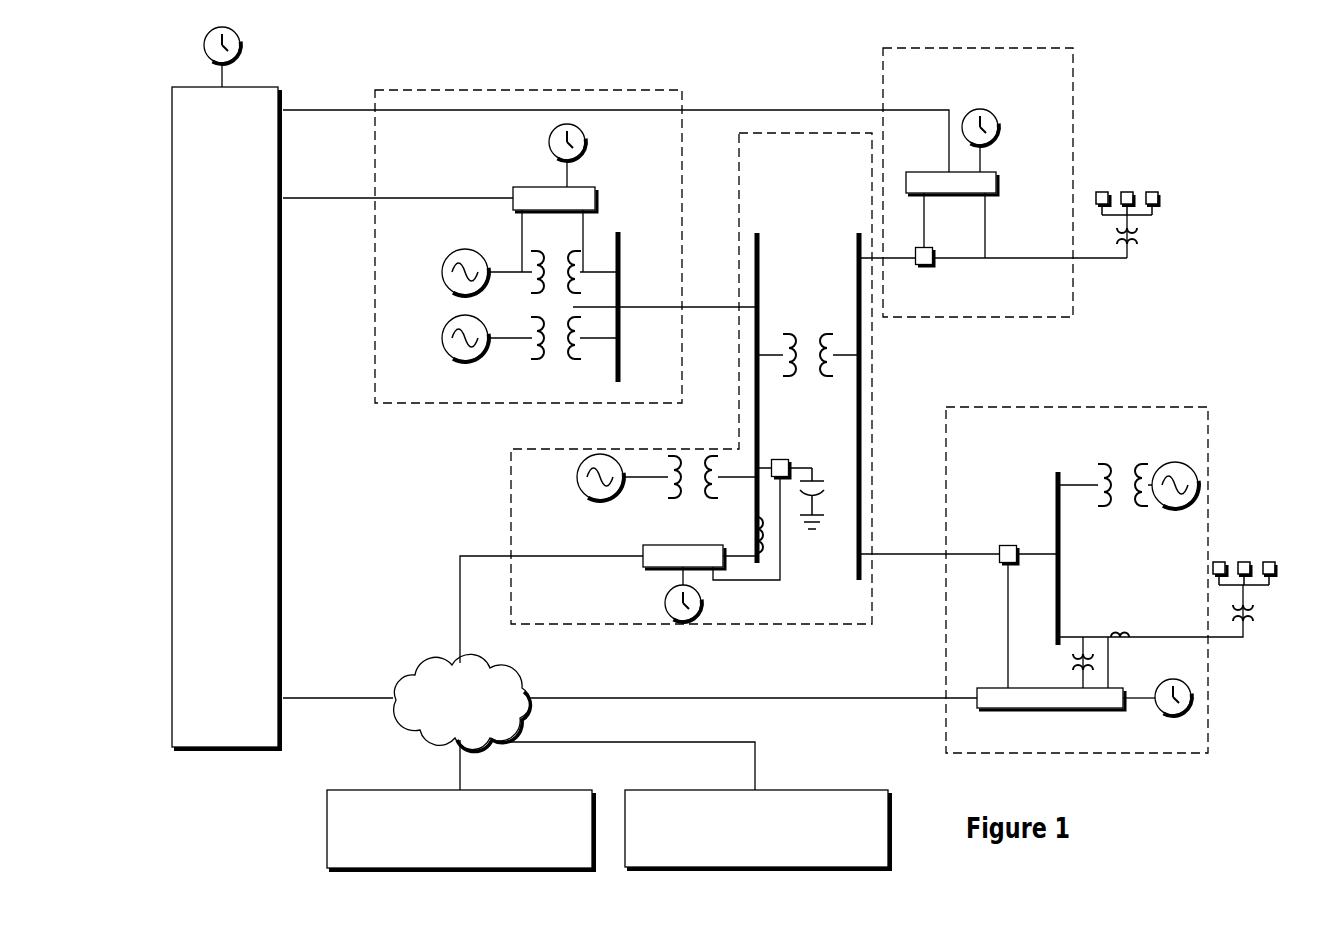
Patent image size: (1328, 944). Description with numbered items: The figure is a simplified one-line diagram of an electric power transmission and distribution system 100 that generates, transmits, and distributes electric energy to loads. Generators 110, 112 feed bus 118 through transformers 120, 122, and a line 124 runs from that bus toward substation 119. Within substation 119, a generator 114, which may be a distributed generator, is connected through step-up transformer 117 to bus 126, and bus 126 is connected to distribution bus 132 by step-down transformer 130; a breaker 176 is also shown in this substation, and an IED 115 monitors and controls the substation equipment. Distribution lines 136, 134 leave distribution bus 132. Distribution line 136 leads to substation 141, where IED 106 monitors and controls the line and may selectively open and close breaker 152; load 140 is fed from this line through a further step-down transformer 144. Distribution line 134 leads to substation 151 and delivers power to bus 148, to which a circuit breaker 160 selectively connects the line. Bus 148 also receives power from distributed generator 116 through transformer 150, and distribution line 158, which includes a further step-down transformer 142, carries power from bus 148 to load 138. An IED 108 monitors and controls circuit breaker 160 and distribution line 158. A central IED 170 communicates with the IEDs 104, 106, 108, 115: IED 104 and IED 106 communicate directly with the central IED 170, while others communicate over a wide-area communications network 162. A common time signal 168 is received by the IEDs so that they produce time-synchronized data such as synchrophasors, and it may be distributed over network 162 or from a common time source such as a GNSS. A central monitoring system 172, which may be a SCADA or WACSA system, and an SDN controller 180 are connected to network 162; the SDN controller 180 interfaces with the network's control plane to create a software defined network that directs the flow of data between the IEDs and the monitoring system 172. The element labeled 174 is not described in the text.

The electric power transmission and distribution system 100 is at (1186, 110).
The IED 104 is at (532, 186).
The IED 106 is at (922, 170).
The IED 108 is at (1095, 710).
The generator 110 is at (440, 265).
The generator 112 is at (440, 331).
The generator 114 is at (578, 480).
The IED 115 is at (708, 545).
The distributed generator 116 is at (1160, 508).
The step-up transformer 117 is at (672, 490).
The bus 118 is at (620, 360).
The substation 119 is at (625, 625).
The transformer 120 is at (535, 285).
The transformer 122 is at (558, 360).
The line 124 is at (700, 310).
The bus 126 is at (759, 375).
The step-down transformer 130 is at (808, 333).
The distribution bus 132 is at (856, 540).
The distribution line 134 is at (955, 556).
The distribution line 136 is at (897, 262).
The load 138 is at (1245, 565).
The load 140 is at (1160, 196).
The substation 141 is at (1050, 318).
The step-down transformer 142 is at (1255, 620).
The step-down transformer 144 is at (1138, 235).
The bus 148 is at (1056, 473).
The transformer 150 is at (1120, 462).
The substation 151 is at (1150, 755).
The breaker 152 is at (935, 268).
The distribution line 158 is at (1148, 630).
The circuit breaker 160 is at (1004, 545).
The communications network 162 is at (574, 722).
The common time signal 168 is at (242, 46).
The central IED 170 is at (226, 418).
The central monitoring system 172 is at (460, 830).
The capacitor bank 174 is at (824, 481).
The breaker 176 is at (787, 458).
The SDN controller 180 is at (757, 829).